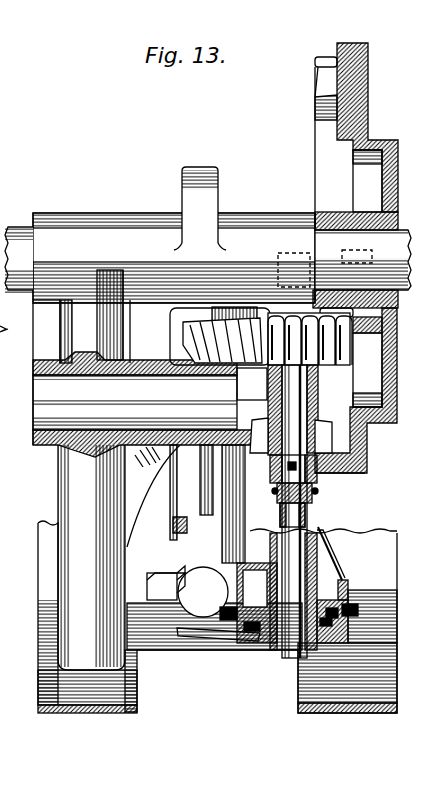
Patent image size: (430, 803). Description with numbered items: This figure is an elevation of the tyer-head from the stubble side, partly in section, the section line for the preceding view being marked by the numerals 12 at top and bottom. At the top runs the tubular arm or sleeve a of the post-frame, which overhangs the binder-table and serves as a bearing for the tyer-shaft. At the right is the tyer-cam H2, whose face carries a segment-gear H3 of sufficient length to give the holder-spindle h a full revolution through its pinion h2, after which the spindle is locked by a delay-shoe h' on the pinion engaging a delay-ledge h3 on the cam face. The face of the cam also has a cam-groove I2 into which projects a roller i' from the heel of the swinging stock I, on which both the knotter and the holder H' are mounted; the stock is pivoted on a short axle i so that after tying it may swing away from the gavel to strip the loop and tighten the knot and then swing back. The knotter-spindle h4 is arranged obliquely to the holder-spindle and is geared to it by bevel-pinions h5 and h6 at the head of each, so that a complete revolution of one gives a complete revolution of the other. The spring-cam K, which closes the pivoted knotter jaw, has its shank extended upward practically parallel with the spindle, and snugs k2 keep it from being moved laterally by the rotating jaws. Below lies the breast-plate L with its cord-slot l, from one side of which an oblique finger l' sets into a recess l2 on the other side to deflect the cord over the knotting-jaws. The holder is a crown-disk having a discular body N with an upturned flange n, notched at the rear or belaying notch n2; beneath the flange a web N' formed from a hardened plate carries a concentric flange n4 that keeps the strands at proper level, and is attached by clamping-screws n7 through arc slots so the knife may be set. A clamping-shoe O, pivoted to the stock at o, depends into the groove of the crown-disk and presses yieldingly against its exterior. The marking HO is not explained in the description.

The tubular arm or sleeve a is at (208, 235).
The segment-gear H3 is at (328, 67).
The tyer-cam H2 is at (355, 206).
The cam-groove I2 is at (367, 181).
The section line 12 is at (291, 745).
The roller i' is at (384, 358).
The bevel-pinion h6 is at (328, 350).
The stock I is at (150, 357).
The short axle i is at (135, 402).
The bevel-pinion h5 is at (200, 335).
The holder-spindle h is at (310, 485).
The pinion h2 is at (325, 440).
The delay-shoe h' is at (284, 470).
The delay-ledge h3 is at (322, 477).
The pivot o is at (318, 494).
The spring-cam K is at (172, 500).
The snugs k2 is at (198, 470).
The cord-slot l is at (228, 504).
The breast-plate L is at (78, 685).
The knotter-spindle h4 is at (246, 598).
The disk HO is at (203, 592).
The rear or belaying notch n2 is at (268, 560).
The recess l2 is at (186, 625).
The oblique finger l' is at (218, 655).
The clamping-screws n7 is at (262, 640).
The holder H' is at (347, 623).
The clamping-shoe O is at (333, 553).
The upturned flange n is at (342, 611).
The concentric flange n4 is at (363, 611).
The discular body N is at (348, 631).
The web N' is at (381, 632).